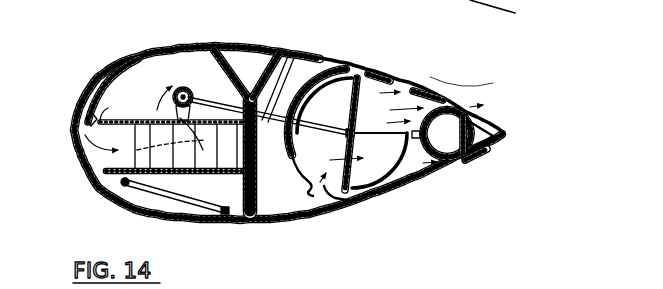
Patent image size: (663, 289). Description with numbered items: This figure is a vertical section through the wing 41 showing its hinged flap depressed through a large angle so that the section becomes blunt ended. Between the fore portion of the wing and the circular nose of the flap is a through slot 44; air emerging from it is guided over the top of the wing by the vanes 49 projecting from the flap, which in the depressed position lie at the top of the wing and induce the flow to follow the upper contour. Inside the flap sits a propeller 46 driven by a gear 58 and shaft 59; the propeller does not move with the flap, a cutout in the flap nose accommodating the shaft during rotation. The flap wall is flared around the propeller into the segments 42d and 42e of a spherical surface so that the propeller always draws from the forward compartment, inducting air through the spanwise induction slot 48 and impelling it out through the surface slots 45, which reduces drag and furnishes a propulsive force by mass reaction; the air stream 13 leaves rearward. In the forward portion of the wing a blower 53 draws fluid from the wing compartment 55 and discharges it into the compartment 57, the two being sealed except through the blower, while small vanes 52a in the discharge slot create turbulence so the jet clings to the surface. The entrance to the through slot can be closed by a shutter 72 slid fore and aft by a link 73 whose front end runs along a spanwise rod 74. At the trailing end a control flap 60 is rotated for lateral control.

The air stream through upper slot 13 is at (378, 82).
The wing 41 is at (98, 188).
The flared wall segment 42d is at (327, 95).
The flared wall segment 42e is at (377, 165).
The through slot 44 is at (312, 57).
The slot 45 is at (420, 83).
The propeller 46 is at (345, 152).
The induction slot 48 is at (310, 190).
The vane 49 is at (281, 127).
The small vane 52a is at (80, 112).
The blower 53 is at (138, 117).
The wing compartment 55 is at (191, 82).
The compartment 57 is at (221, 196).
The gear 58 is at (190, 95).
The shaft 59 is at (270, 113).
The control flap 60 is at (500, 133).
The shutter 72 is at (330, 212).
The link 73 is at (177, 220).
The spanwise rod 74 is at (118, 193).